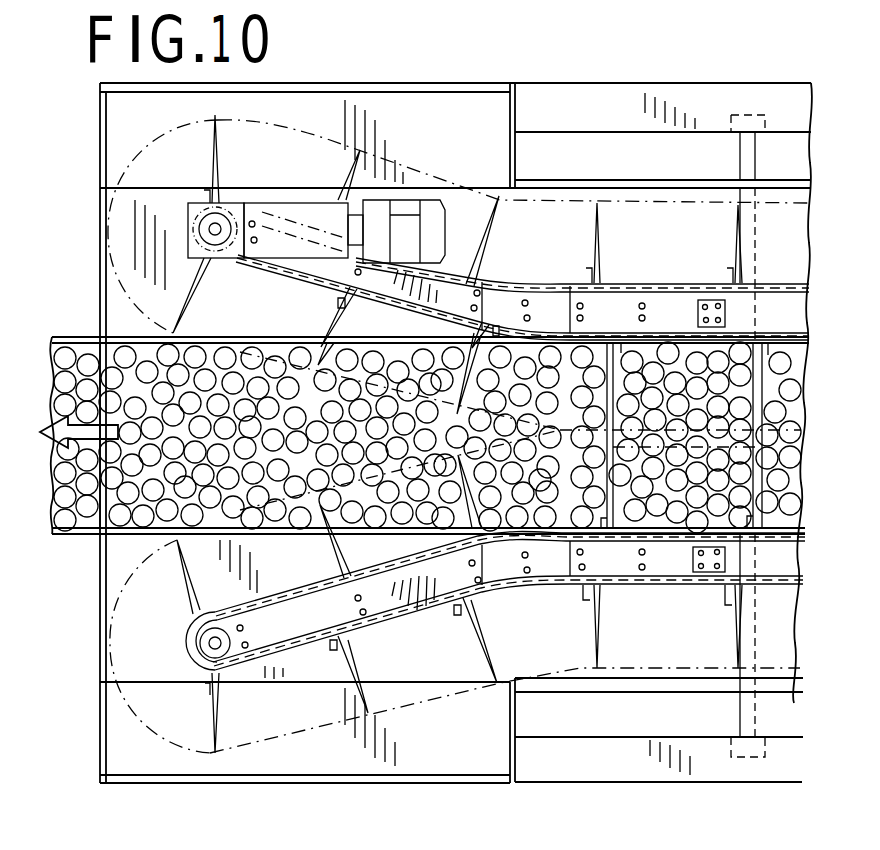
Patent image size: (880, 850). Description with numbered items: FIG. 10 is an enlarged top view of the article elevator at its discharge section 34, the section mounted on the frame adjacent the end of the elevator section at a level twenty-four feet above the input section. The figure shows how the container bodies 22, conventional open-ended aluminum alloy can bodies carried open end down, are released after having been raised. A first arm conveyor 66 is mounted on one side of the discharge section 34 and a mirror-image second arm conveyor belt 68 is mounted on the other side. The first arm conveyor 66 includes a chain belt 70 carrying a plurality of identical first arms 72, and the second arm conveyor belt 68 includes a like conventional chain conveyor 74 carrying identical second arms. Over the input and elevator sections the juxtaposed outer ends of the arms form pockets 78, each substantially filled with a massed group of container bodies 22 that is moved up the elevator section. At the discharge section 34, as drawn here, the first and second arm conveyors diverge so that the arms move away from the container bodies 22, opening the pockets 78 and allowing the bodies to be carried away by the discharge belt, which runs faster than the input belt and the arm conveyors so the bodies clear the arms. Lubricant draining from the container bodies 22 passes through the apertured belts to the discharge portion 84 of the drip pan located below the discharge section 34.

The container bodies 22 is at (675, 520).
The discharge section 34 is at (565, 172).
The first arm conveyor 66 is at (581, 570).
The second arm conveyor belt 68 is at (703, 283).
The chain belt 70 is at (325, 645).
The first arms 72 is at (367, 667).
The chain conveyor 74 is at (458, 263).
The pockets 78 is at (637, 337).
The discharge portion 84 is at (668, 225).